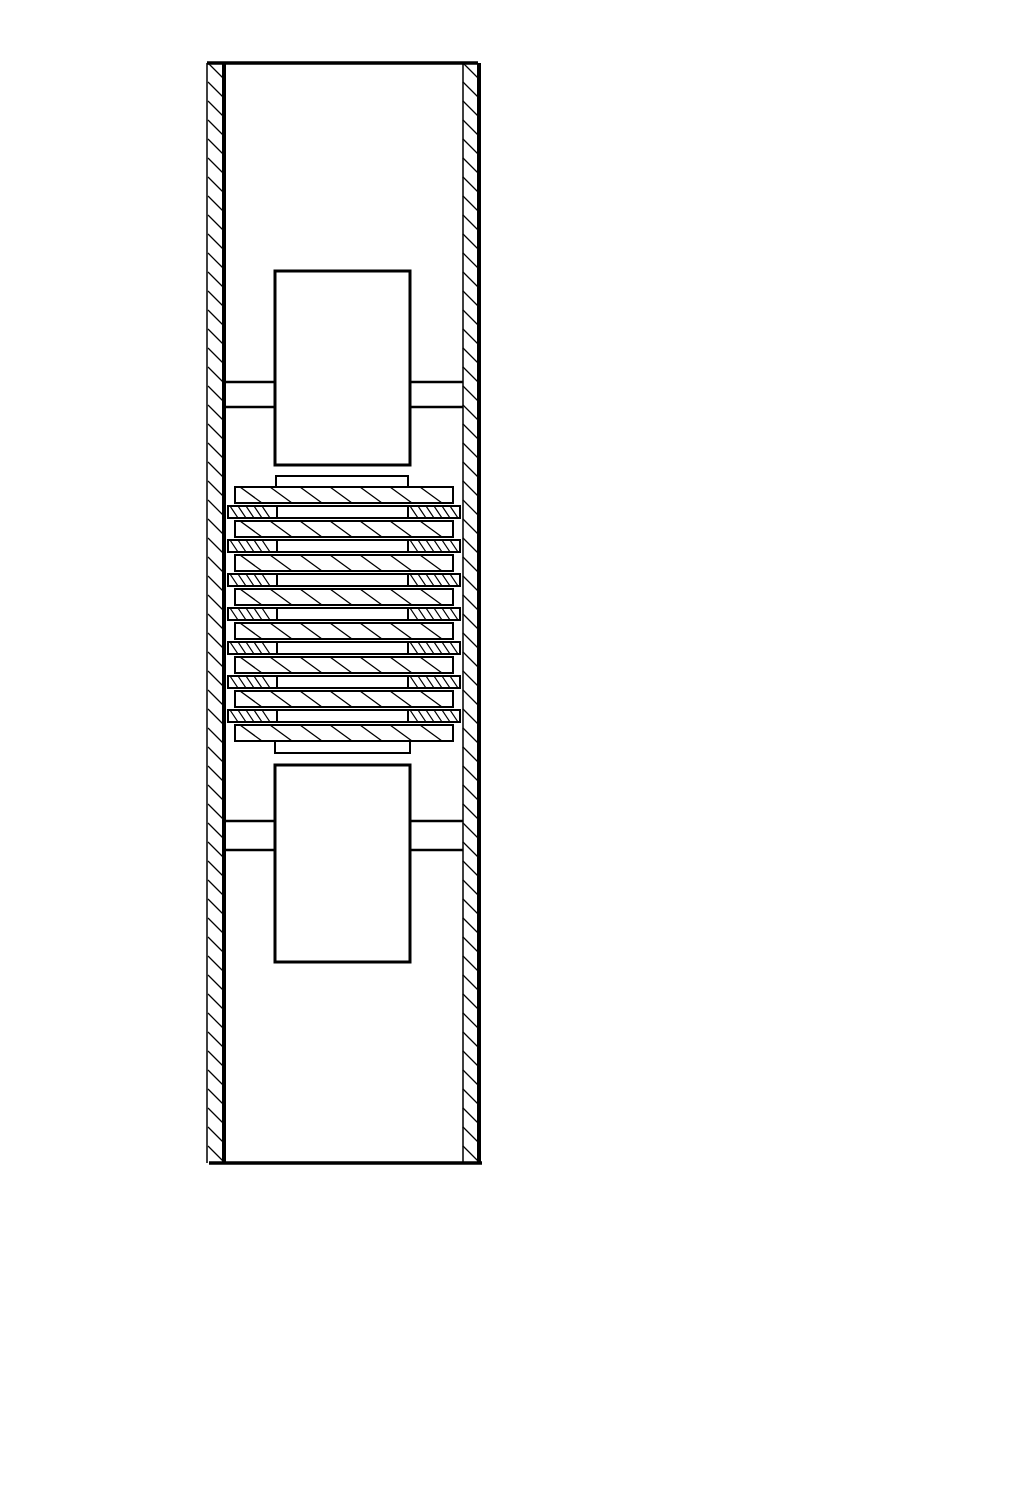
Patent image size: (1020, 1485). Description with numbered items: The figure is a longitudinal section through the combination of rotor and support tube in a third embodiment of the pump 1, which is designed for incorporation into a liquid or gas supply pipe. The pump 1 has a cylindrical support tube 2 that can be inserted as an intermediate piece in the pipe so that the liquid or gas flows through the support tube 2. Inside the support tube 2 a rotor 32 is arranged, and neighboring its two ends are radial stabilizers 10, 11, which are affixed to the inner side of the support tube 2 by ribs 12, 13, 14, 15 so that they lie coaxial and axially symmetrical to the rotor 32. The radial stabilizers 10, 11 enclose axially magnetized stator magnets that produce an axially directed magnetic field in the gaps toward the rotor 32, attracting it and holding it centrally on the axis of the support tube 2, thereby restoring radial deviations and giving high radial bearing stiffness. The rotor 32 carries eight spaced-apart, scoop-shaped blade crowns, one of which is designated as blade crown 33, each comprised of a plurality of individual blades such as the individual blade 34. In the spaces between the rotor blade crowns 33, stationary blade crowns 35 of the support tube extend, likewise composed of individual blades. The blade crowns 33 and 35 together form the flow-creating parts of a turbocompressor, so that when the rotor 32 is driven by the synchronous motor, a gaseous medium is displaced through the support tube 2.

The pump 1 is at (363, 670).
The support tube 2 is at (500, 77).
The radial stabilizer 10 is at (392, 294).
The radial stabilizer 11 is at (390, 795).
The rib 12 is at (243, 395).
The rib 13 is at (430, 385).
The rib 14 is at (248, 835).
The rib 15 is at (435, 838).
The rotor 32 is at (420, 469).
The blade crown 33 is at (458, 560).
The individual blade 34 is at (445, 530).
The blade crown of the support tube 35 is at (445, 648).